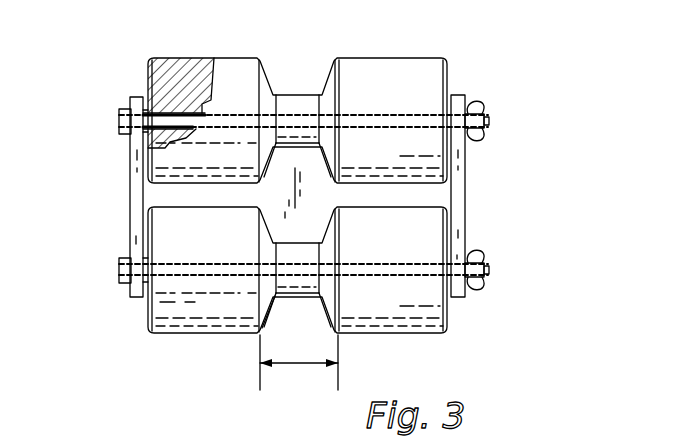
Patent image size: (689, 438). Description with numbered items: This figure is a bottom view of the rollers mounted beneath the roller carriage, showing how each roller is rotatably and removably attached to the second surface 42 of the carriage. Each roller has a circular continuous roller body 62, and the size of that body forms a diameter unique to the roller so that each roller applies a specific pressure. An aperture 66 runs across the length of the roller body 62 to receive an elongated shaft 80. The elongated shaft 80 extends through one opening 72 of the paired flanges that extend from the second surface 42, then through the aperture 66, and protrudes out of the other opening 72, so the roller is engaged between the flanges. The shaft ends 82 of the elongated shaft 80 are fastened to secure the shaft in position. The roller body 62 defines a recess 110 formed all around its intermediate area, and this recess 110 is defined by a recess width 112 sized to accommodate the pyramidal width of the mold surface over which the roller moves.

The second surface 42 is at (462, 192).
The roller body 62 is at (200, 322).
The aperture 66 is at (295, 120).
The opening 72 is at (468, 100).
The elongated shaft 80 is at (172, 110).
The shaft ends 82 is at (150, 112).
The recess 110 is at (314, 314).
The recess width 112 is at (298, 366).